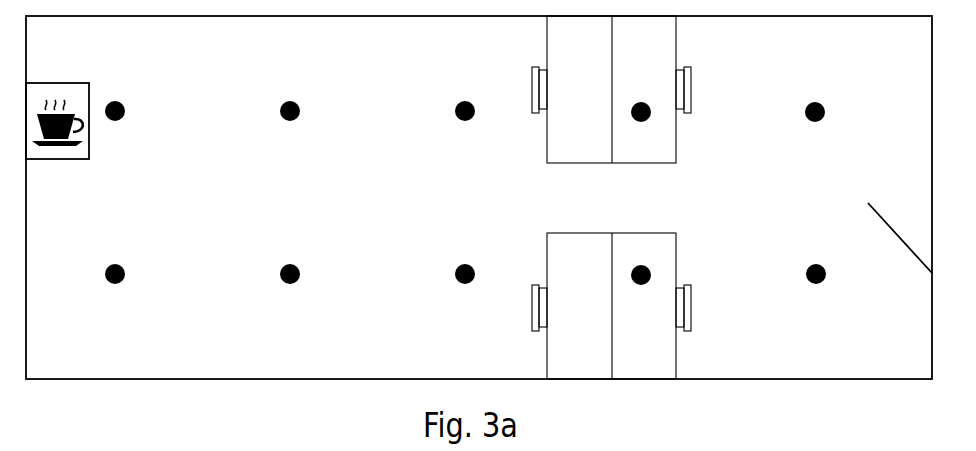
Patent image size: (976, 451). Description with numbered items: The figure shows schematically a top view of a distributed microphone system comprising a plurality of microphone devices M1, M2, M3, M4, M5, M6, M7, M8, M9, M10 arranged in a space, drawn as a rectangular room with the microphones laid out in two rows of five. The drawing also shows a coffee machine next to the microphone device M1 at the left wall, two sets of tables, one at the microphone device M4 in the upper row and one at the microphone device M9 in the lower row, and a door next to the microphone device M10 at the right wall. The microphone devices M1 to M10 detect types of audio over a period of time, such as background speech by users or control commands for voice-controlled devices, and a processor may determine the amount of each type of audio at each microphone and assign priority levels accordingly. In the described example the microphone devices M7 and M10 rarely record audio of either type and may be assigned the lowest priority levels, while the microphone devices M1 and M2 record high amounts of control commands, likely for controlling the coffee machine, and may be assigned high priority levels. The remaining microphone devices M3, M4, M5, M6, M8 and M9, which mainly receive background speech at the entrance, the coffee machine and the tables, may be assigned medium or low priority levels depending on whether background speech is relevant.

The microphone device M1 is at (118, 129).
The microphone device M2 is at (288, 129).
The microphone device M3 is at (463, 129).
The microphone device M4 is at (638, 130).
The microphone device M5 is at (813, 130).
The microphone device M6 is at (118, 292).
The microphone device M7 is at (288, 292).
The microphone device M8 is at (463, 292).
The microphone device M9 is at (638, 293).
The microphone device M10 is at (816, 292).